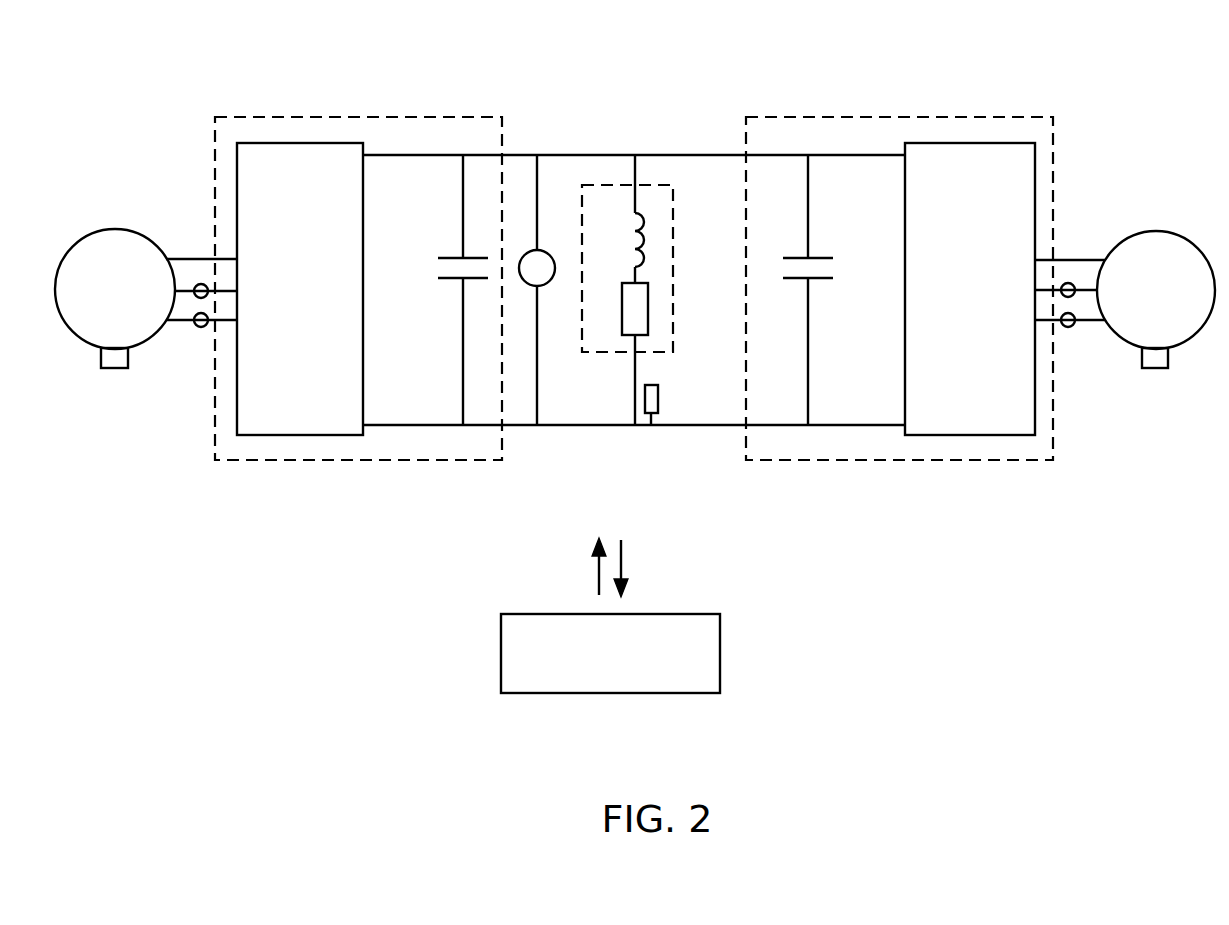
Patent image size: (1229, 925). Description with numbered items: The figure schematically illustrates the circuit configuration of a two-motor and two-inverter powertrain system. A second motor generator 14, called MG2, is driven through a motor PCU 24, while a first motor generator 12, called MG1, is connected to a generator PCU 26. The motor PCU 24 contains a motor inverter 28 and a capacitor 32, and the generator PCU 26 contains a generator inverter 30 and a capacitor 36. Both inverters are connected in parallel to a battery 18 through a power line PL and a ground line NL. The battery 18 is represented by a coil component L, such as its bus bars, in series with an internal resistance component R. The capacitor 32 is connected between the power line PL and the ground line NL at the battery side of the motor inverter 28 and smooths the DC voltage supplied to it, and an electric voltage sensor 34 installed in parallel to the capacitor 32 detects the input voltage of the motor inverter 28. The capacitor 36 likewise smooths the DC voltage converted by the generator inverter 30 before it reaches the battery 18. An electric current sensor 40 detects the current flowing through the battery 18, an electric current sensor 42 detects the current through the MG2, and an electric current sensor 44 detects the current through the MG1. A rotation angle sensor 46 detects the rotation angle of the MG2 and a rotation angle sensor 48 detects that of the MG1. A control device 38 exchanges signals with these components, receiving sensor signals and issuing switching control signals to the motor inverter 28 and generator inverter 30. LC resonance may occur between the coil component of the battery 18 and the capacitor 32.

The first motor generator 12 is at (1152, 232).
The second motor generator 14 is at (115, 230).
The battery 18 is at (655, 185).
The motor PCU 24 is at (350, 106).
The generator PCU 26 is at (903, 106).
The motor inverter 28 is at (272, 143).
The generator inverter 30 is at (1002, 143).
The capacitor 32 is at (473, 258).
The electric voltage sensor 34 is at (541, 250).
The capacitor 36 is at (820, 258).
The control device 38 is at (720, 652).
The electric current sensor 40 is at (652, 425).
The electric current sensor 42 is at (200, 298).
The electric current sensor 44 is at (1068, 297).
The rotation angle sensor 46 is at (115, 368).
The rotation angle sensor 48 is at (1158, 368).
The power line PL is at (608, 155).
The ground line NL is at (571, 425).